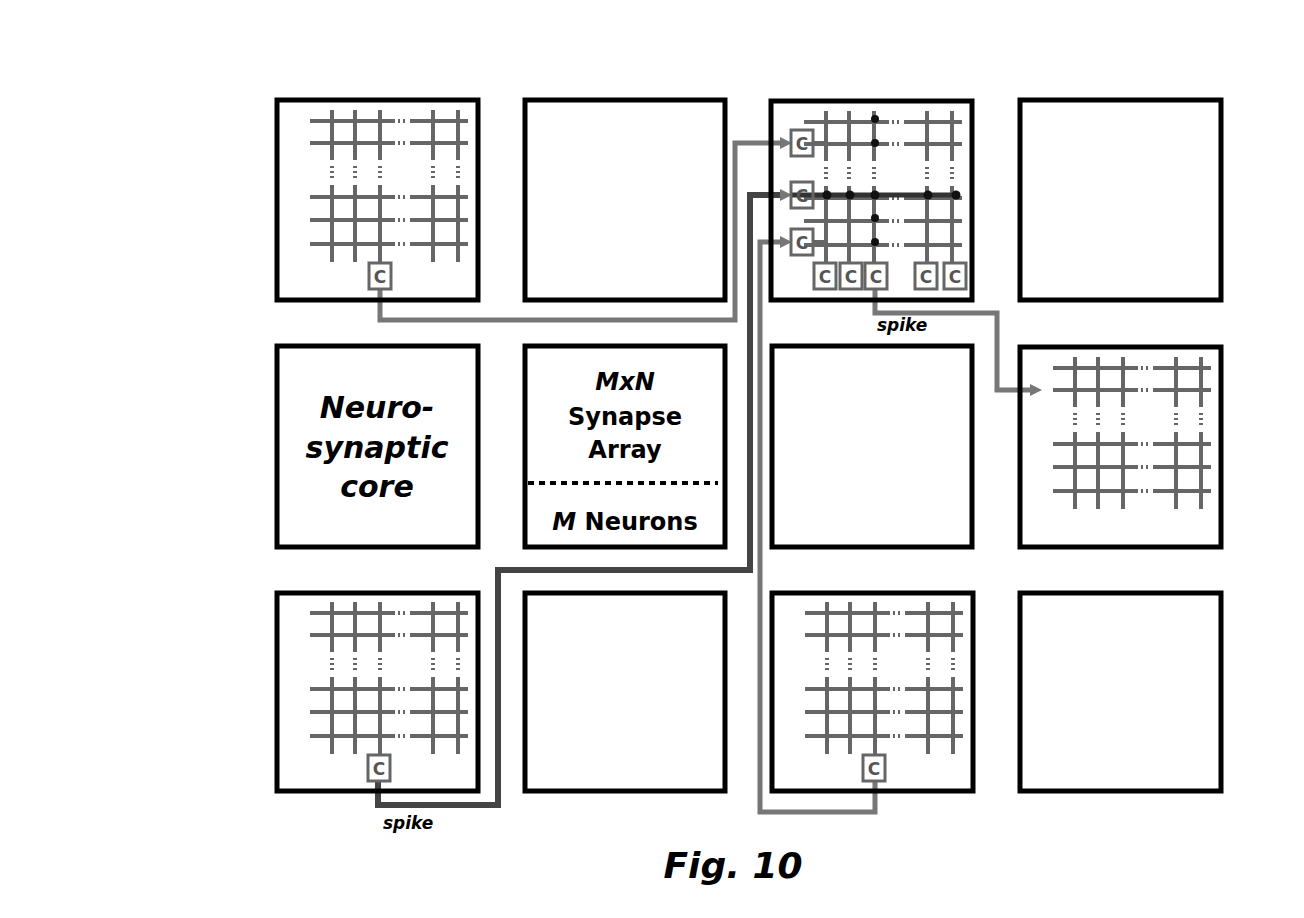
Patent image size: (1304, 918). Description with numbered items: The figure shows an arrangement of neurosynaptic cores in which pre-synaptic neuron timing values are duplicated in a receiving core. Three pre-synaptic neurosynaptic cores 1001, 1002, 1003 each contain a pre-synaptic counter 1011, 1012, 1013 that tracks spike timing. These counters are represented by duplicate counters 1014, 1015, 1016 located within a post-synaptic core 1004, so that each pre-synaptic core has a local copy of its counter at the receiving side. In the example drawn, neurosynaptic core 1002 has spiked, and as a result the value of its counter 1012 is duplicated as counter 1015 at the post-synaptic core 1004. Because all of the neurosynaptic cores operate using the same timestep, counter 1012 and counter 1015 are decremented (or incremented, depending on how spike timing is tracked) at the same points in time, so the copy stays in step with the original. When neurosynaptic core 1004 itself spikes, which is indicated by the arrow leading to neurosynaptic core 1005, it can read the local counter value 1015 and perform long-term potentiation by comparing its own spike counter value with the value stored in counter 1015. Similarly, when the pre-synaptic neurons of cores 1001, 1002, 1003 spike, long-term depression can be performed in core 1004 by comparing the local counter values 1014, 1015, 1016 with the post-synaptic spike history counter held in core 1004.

The neurosynaptic core 1001 is at (955, 778).
The neurosynaptic core 1002 is at (306, 776).
The neurosynaptic core 1003 is at (297, 118).
The post-synaptic core 1004 is at (902, 116).
The neurosynaptic core 1005 is at (1197, 406).
The pre-synaptic counter 1011 is at (877, 782).
The pre-synaptic counter 1012 is at (370, 774).
The pre-synaptic counter 1013 is at (369, 281).
The duplicate counter 1014 is at (797, 128).
The duplicate counter 1015 is at (792, 184).
The duplicate counter 1016 is at (792, 228).